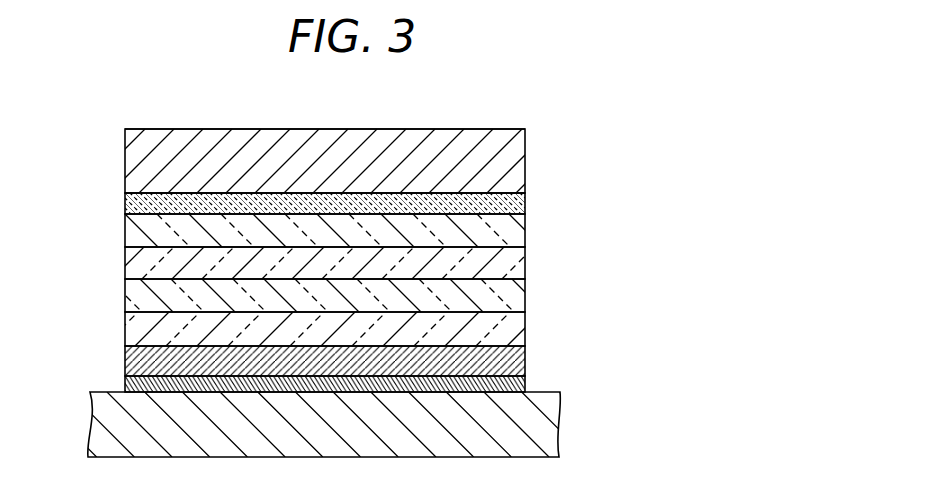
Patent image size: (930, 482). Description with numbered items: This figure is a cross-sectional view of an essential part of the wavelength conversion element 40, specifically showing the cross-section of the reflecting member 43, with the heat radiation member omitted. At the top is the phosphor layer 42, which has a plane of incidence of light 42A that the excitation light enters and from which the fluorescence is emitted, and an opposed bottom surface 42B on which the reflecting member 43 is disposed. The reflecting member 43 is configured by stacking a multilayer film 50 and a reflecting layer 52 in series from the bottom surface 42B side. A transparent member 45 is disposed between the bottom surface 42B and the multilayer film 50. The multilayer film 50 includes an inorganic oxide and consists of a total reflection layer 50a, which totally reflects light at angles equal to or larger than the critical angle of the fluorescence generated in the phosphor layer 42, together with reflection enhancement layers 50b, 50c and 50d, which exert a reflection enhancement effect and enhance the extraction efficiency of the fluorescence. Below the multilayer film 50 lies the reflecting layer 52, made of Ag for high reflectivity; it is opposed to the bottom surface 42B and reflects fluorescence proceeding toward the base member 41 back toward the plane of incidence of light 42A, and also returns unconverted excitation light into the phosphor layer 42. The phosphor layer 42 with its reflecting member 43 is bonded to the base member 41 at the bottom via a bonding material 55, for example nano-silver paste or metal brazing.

The wavelength conversion element 40 is at (390, 246).
The base member 41 is at (543, 425).
The phosphor layer 42 is at (525, 162).
The plane of incidence of light 42A is at (145, 129).
The bottom surface 42B is at (143, 211).
The reflecting member 43 is at (392, 295).
The transparent member 45 is at (525, 205).
The multilayer film 50 is at (356, 280).
The total reflection layer 50a is at (525, 232).
The reflection enhancement layer 50b is at (525, 266).
The reflection enhancement layer 50c is at (525, 298).
The reflection enhancement layer 50d is at (340, 329).
The reflecting layer 52 is at (381, 361).
The bonding material 55 is at (525, 383).